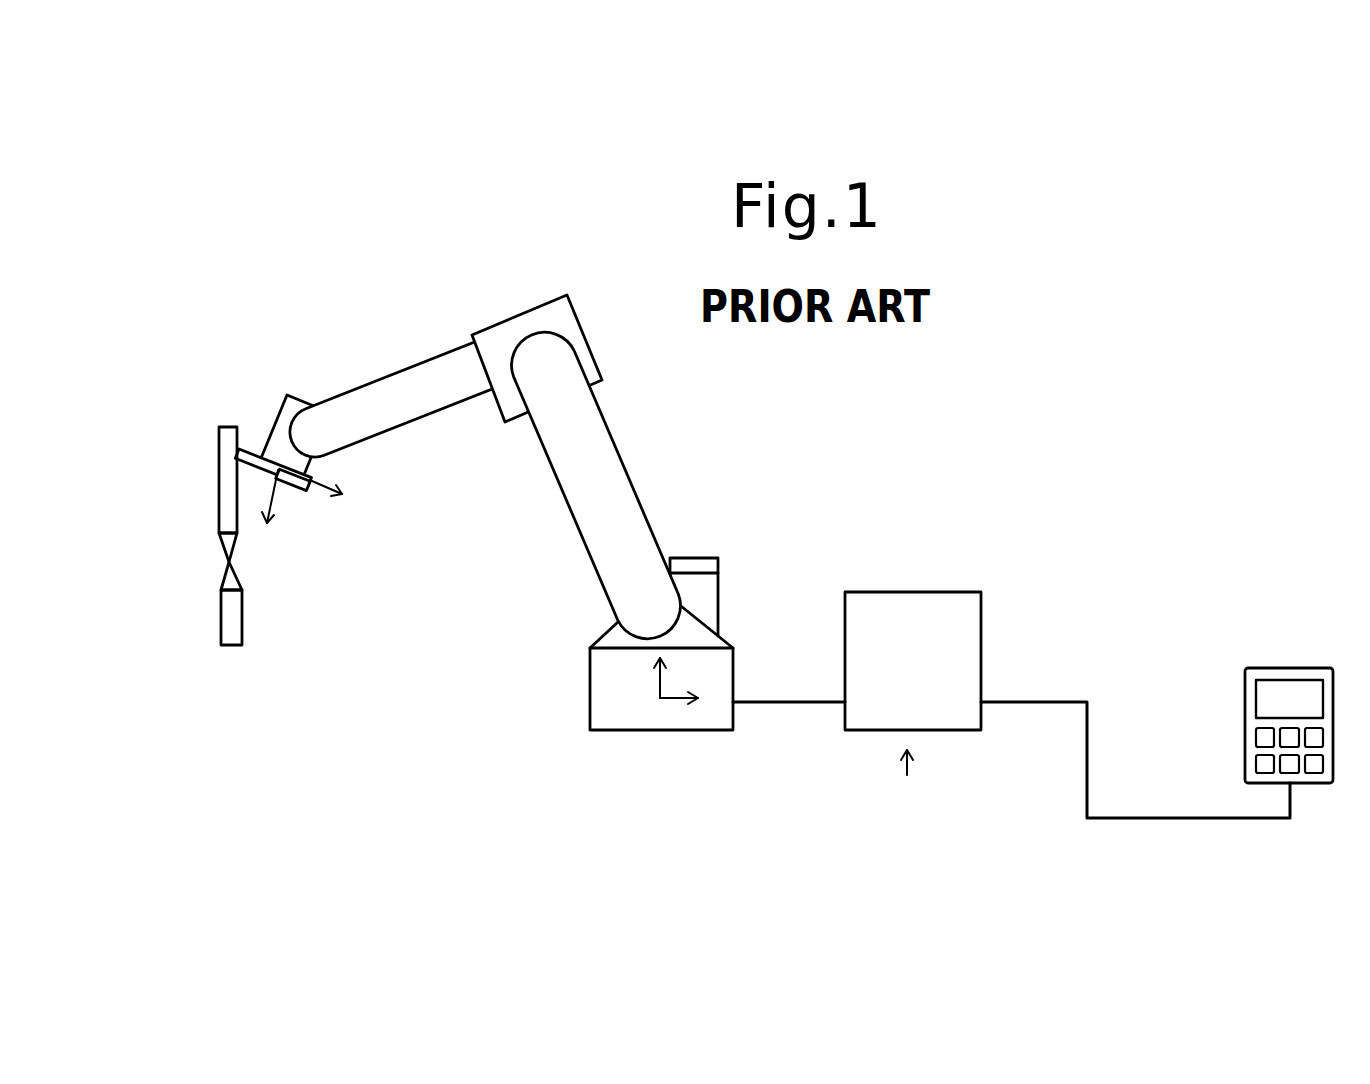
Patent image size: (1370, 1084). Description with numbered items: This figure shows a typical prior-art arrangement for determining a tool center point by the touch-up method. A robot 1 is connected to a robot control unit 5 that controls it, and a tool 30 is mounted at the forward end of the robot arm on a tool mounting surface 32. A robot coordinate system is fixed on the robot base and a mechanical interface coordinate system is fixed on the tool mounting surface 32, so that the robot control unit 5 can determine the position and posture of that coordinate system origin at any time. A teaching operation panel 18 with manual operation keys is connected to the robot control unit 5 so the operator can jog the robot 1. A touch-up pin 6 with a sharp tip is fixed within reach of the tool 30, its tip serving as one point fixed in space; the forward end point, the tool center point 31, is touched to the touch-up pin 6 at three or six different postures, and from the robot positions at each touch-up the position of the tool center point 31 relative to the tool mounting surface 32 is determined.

The robot 1 is at (608, 478).
The robot control unit 5 is at (948, 598).
The touch-up pin 6 is at (227, 627).
The teaching operation panel 18 is at (1297, 670).
The tool 30 is at (230, 432).
The tool center point 31 is at (226, 564).
The tool mounting surface 32 is at (304, 500).